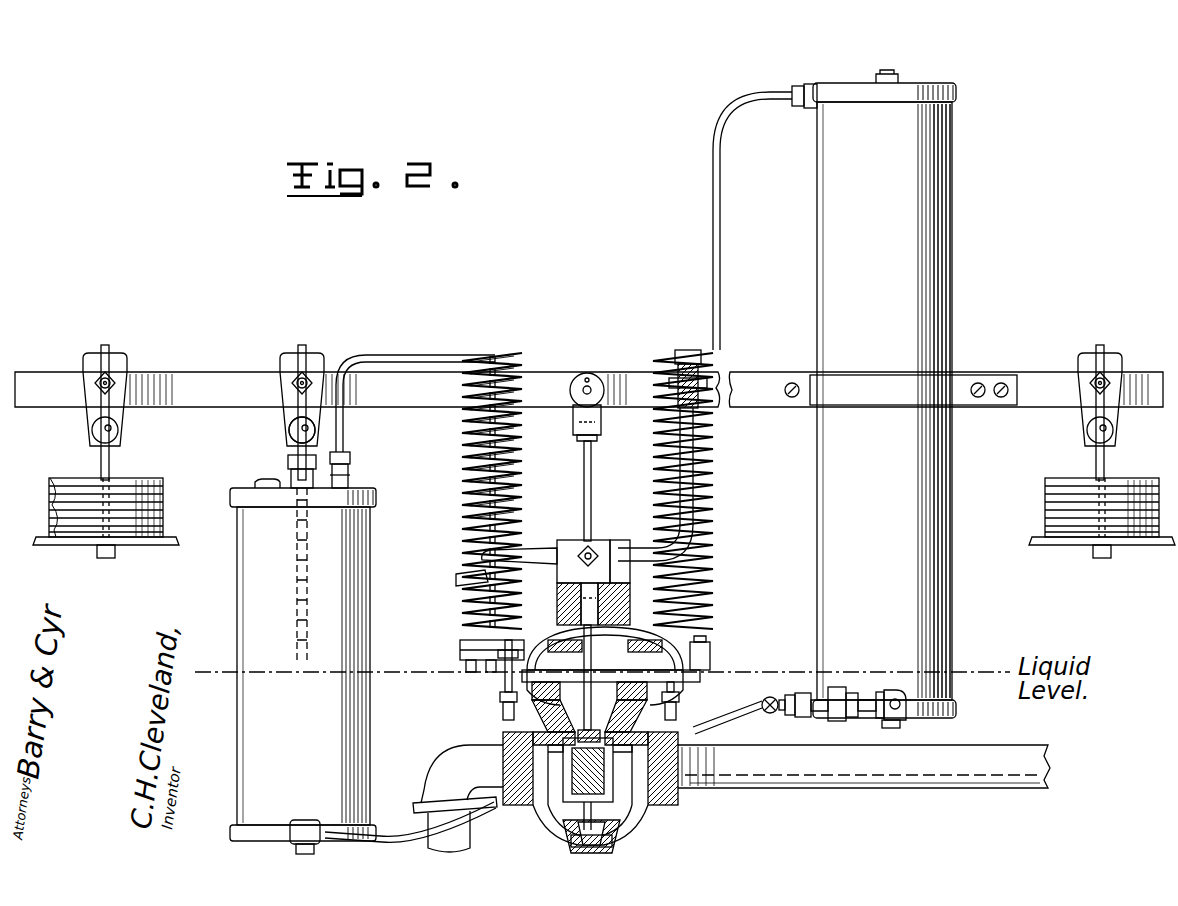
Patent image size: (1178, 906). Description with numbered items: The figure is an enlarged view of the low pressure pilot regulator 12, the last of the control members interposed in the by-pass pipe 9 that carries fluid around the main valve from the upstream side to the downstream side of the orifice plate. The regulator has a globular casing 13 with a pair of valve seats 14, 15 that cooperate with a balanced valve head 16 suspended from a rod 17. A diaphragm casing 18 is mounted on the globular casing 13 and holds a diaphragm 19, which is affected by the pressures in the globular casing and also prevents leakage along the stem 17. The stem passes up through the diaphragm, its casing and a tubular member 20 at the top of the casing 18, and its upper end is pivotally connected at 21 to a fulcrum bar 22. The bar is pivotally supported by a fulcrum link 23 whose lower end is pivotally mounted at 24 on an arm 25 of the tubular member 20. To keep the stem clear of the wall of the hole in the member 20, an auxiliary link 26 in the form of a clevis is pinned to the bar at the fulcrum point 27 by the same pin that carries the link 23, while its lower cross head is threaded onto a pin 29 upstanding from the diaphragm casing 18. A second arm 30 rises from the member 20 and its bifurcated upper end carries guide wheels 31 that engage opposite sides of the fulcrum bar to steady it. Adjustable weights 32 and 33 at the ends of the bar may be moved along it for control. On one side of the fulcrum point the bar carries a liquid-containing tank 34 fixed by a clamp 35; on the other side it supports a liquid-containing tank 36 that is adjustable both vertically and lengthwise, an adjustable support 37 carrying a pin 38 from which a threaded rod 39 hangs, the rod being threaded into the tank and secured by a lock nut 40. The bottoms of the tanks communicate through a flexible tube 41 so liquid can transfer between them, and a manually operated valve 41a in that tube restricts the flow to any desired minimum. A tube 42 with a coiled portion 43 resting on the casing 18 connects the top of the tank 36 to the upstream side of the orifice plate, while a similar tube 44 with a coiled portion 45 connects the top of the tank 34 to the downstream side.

The by-pass pipe 9 is at (946, 790).
The low pressure pilot regulator 12 is at (640, 832).
The globular casing 13 is at (650, 818).
The valve seat 14 is at (650, 700).
The valve seat 15 is at (607, 795).
The balanced valve head 16 is at (562, 818).
The rod 17 is at (572, 700).
The diaphragm casing 18 is at (700, 670).
The diaphragm 19 is at (680, 662).
The tubular member 20 is at (614, 588).
The pivotal connection 21 is at (596, 384).
The fulcrum bar 22 is at (548, 378).
The fulcrum link 23 is at (519, 470).
The pivotal mounting 24 is at (522, 540).
The arm 25 is at (542, 568).
The auxiliary link 26 is at (458, 580).
The fulcrum point 27 is at (490, 355).
The pin 29 is at (460, 622).
The second arm 30 is at (690, 494).
The guide wheels 31 is at (700, 384).
The adjustable weight 32 is at (142, 492).
The adjustable weight 33 is at (1060, 490).
The liquid-containing tank 34 is at (938, 285).
The clamp 35 is at (955, 375).
The liquid-containing tank 36 is at (240, 598).
The adjustable support 37 is at (316, 360).
The pin 38 is at (288, 436).
The threaded rod 39 is at (360, 575).
The lock nut 40 is at (286, 466).
The flexible tube 41 is at (412, 825).
The manually operated valve 41a is at (800, 710).
The tube 42 is at (418, 353).
The coiled portion 43 is at (464, 463).
The tube 44 is at (722, 252).
The coiled portion 45 is at (712, 582).